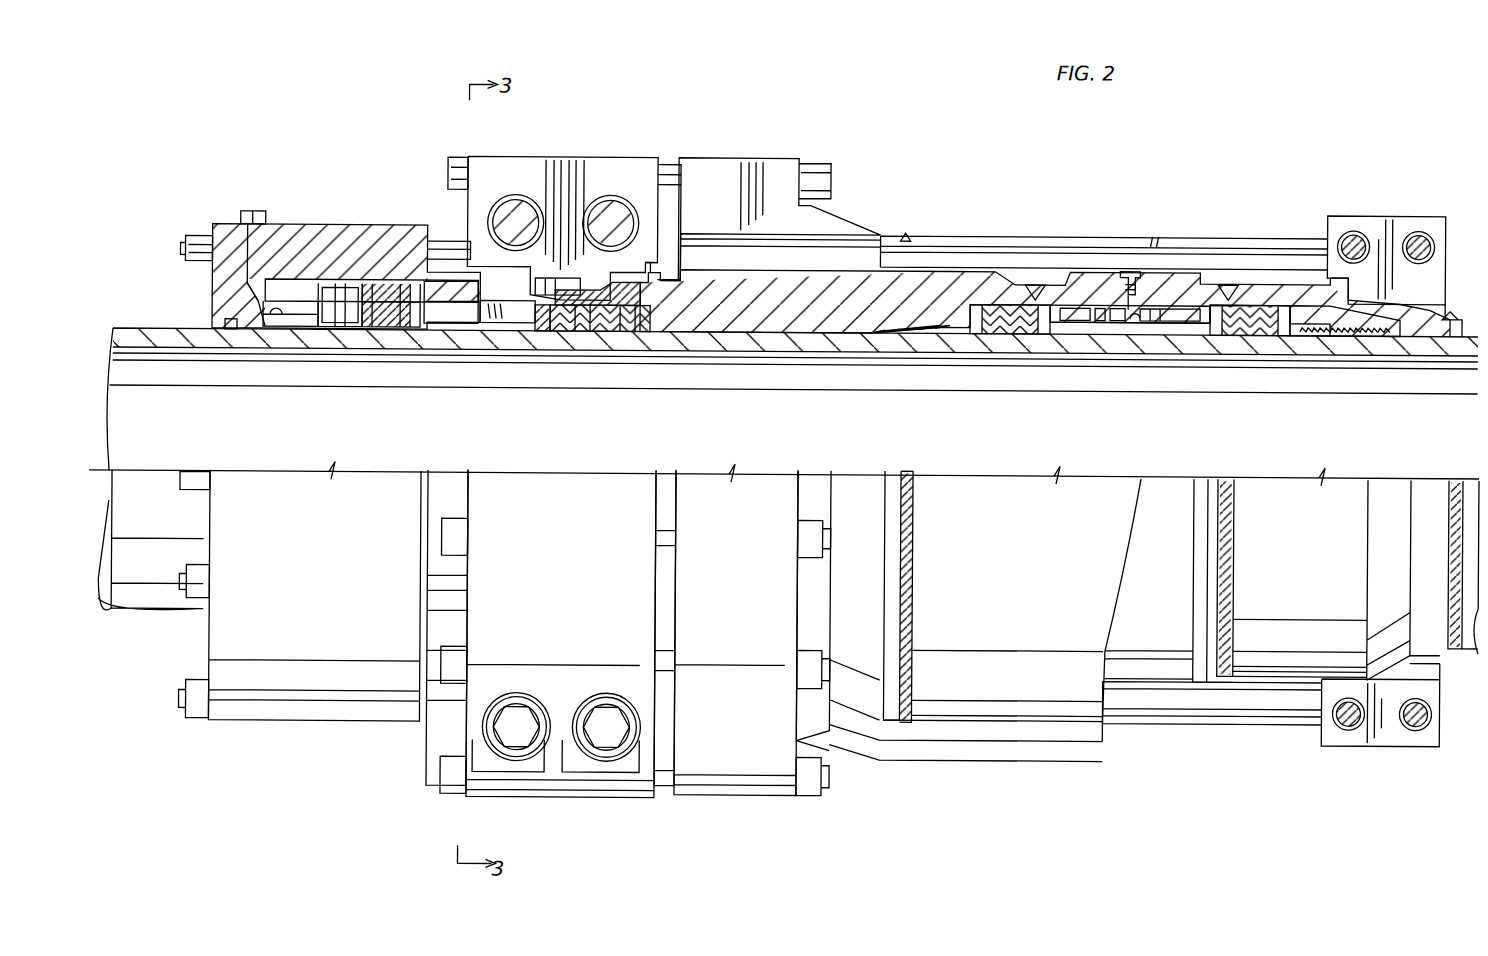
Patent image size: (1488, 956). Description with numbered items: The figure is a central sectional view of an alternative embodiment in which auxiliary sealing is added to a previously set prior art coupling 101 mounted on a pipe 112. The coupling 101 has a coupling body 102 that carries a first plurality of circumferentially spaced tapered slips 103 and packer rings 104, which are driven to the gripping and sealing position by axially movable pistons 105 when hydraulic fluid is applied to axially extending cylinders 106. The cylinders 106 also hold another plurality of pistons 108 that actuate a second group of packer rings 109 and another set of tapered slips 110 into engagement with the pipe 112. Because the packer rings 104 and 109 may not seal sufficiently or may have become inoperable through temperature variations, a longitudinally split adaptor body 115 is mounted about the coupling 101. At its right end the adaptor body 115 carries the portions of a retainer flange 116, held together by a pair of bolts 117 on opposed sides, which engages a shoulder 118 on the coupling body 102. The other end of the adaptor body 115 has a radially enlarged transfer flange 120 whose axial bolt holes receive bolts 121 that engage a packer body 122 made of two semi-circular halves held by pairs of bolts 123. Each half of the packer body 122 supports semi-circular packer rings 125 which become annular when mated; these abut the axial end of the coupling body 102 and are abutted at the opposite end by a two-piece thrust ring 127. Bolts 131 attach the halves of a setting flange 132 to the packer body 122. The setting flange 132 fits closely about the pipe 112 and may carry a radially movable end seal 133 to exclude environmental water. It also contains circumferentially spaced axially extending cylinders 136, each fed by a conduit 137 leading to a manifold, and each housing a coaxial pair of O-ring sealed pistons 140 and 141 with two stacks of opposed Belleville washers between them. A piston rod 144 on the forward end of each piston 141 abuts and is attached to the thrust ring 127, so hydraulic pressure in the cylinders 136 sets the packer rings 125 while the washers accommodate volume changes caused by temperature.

The prior art coupling 101 is at (977, 257).
The coupling body 102 is at (1175, 278).
The tapered slips 103 is at (918, 327).
The packer rings 104 is at (1020, 322).
The axially movable pistons 105 is at (1085, 318).
The axially extending cylinders 106 is at (1132, 315).
The pistons 108 is at (1192, 315).
The packer rings 109 is at (1248, 322).
The tapered slips 110 is at (1340, 324).
The pipe 112 is at (1452, 343).
The adaptor body 115 is at (1058, 234).
The retainer flange 116 is at (1366, 209).
The bolts 117 is at (1418, 223).
The shoulder 118 is at (1400, 291).
The transfer flange 120 is at (740, 163).
The bolts 121 is at (668, 176).
The packer body 122 is at (517, 162).
The bolts 123 is at (605, 212).
The packer rings 125 is at (610, 328).
The thrust ring 127 is at (543, 315).
The bolts 131 is at (440, 244).
The setting flange 132 is at (290, 230).
The end seal 133 is at (228, 330).
The cylinders 136 is at (283, 320).
The conduit 137 is at (246, 265).
The piston 140 is at (350, 305).
The piston 141 is at (400, 305).
The piston rod 144 is at (515, 320).